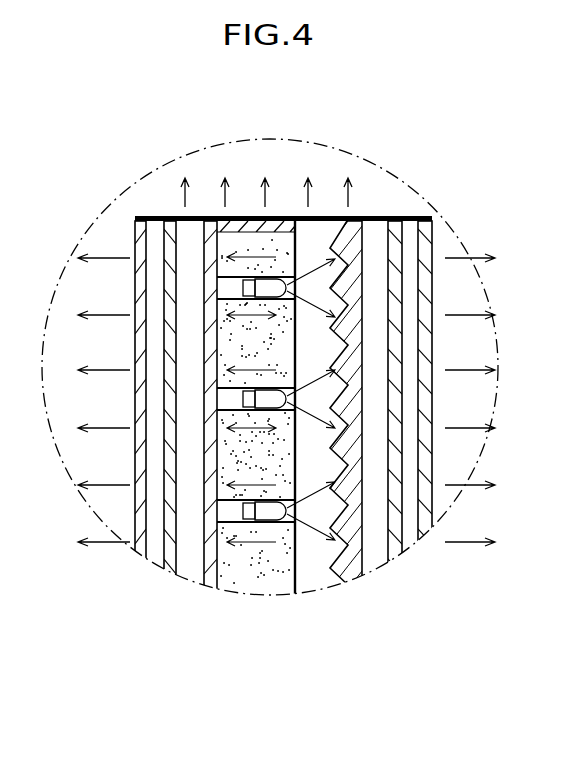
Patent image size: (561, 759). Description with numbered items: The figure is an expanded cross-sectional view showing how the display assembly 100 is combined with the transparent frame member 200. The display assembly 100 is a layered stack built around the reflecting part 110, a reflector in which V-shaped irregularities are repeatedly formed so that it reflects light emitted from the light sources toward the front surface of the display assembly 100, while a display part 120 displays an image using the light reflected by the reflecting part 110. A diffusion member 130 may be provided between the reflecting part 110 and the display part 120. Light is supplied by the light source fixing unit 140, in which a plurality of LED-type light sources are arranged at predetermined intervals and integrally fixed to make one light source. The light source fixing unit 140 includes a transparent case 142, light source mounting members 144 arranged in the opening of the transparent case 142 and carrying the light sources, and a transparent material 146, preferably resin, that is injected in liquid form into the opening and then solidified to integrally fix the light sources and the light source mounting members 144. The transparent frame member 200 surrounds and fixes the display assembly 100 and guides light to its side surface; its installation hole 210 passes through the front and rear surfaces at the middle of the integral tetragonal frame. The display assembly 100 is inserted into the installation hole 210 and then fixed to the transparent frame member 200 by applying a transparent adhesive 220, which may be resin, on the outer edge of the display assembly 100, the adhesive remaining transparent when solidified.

The display assembly 100 is at (85, 701).
The reflecting part 110 is at (352, 553).
The display part 120 is at (138, 548).
The diffusion member 130 is at (169, 555).
The light source fixing unit 140 is at (190, 662).
The transparent case 142 is at (208, 573).
The light source mounting members 144 is at (247, 583).
The transparent material 146 is at (280, 587).
The transparent frame member 200 is at (225, 165).
The installation hole 210 is at (178, 238).
The transparent adhesive 220 is at (340, 217).